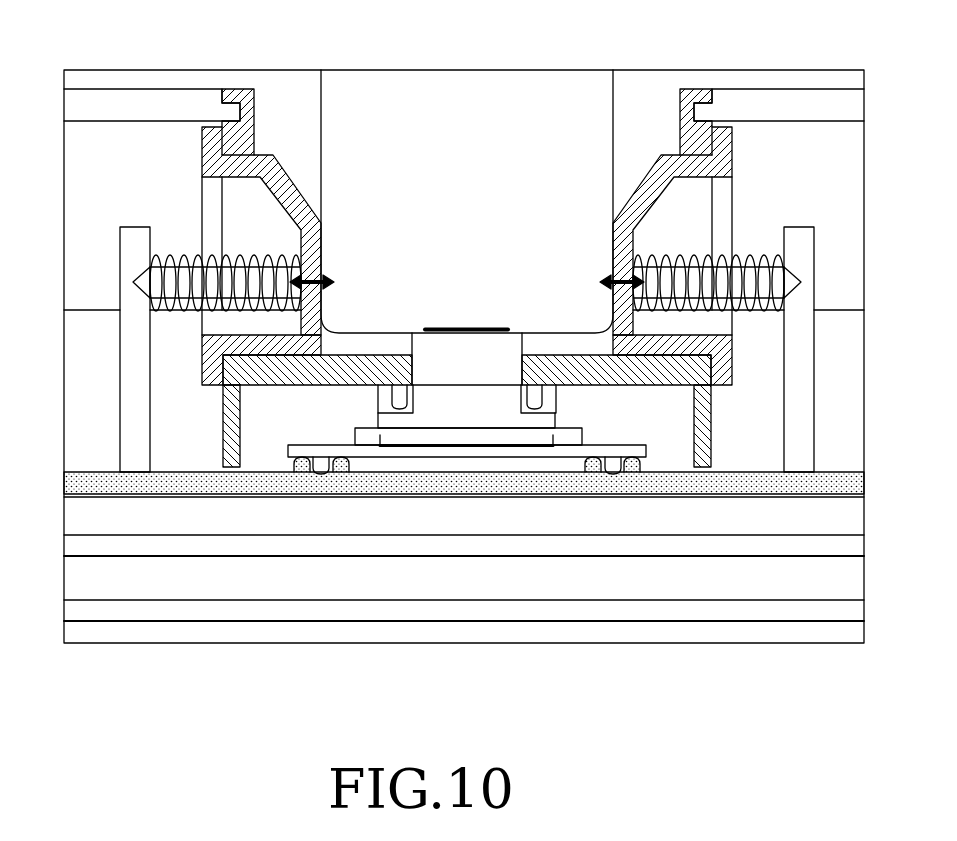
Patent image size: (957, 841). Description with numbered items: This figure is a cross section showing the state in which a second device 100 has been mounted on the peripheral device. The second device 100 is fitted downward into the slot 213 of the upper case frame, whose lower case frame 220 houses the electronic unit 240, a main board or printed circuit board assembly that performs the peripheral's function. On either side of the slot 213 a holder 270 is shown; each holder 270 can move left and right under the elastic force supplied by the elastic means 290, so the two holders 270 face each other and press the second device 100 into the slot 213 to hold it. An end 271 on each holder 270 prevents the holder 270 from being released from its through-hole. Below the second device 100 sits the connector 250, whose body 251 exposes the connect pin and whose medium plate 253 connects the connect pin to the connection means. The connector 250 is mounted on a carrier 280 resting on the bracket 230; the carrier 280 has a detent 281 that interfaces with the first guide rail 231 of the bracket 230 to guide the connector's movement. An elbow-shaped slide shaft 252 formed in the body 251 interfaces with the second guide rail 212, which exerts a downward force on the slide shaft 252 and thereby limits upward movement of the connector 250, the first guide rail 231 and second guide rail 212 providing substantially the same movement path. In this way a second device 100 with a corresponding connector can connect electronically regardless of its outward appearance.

The second device 100 is at (476, 98).
The second guide rail 212 is at (400, 405).
The slot 213 is at (308, 102).
The lower case frame 220 is at (784, 606).
The bracket 230 is at (400, 500).
The first guide rail 231 is at (340, 462).
The electronic unit 240 is at (545, 540).
The connector 250 is at (507, 352).
The body 251 is at (428, 347).
The elbow-shaped slide shaft 252 is at (388, 403).
The medium plate 253 is at (568, 433).
The holder 270 is at (290, 186).
The end 271 is at (215, 148).
The carrier 280 is at (301, 446).
The detent 281 is at (322, 463).
The elastic means 290 is at (129, 347).